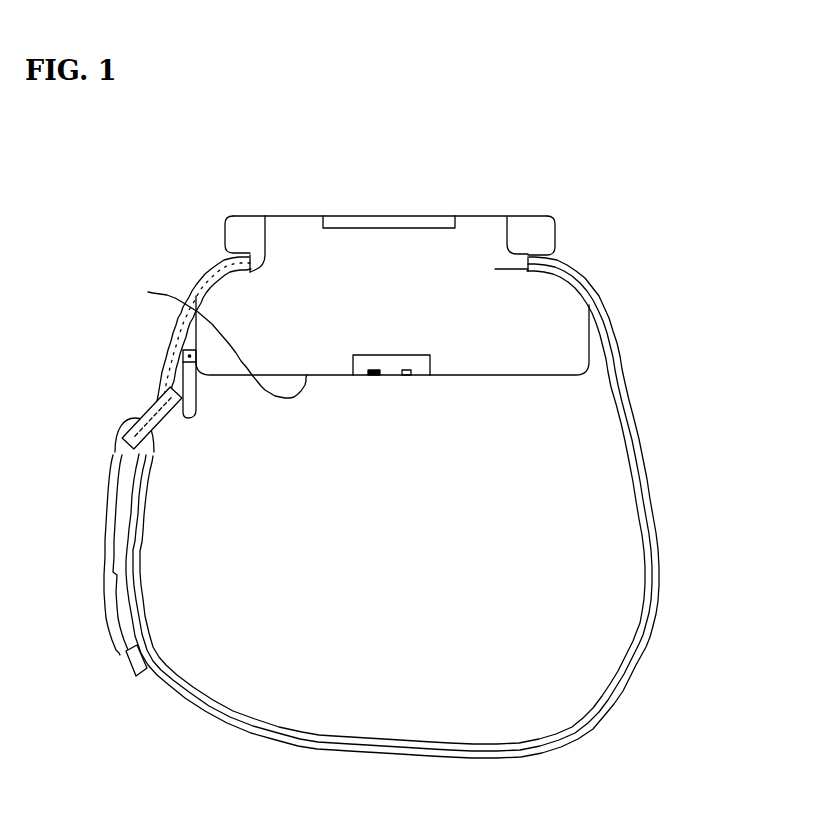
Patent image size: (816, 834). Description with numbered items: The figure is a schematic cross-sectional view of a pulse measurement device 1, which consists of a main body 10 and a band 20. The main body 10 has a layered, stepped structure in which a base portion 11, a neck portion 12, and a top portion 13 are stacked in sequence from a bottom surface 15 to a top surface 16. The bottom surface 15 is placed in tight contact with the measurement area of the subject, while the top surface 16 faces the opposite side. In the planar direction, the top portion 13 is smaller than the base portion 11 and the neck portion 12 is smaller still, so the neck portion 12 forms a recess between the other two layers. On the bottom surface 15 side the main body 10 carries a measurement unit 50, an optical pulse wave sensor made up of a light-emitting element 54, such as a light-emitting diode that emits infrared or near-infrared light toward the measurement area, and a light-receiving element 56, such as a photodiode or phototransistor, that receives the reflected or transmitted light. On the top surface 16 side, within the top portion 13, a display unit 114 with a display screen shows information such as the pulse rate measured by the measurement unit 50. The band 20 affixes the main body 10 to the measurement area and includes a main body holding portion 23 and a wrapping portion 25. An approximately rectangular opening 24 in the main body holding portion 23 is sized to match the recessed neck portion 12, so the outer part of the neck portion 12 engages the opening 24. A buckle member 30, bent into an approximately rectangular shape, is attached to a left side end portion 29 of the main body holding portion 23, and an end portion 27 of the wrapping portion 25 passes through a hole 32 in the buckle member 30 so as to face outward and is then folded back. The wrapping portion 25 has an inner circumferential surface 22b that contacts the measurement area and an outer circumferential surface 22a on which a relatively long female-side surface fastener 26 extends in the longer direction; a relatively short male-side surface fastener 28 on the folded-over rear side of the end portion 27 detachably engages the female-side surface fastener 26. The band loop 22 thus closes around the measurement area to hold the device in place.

The pulse measurement device 1 is at (684, 658).
The main body 10 is at (362, 178).
The base portion 11 is at (547, 350).
The neck portion 12 is at (537, 262).
The top portion 13 is at (548, 230).
The bottom surface 15 is at (212, 338).
The top surface 16 is at (287, 215).
The band 20 is at (588, 735).
The band loop 22 is at (436, 521).
The outer circumferential surface 22a is at (650, 620).
The inner circumferential surface 22b is at (648, 509).
The main body holding portion 23 is at (222, 265).
The opening 24 is at (252, 215).
The wrapping portion 25 is at (648, 478).
The female-side surface fastener 26 is at (207, 717).
The end portion 27 is at (108, 608).
The male-side surface fastener 28 is at (130, 660).
The left side end portion 29 is at (170, 370).
The buckle member 30 is at (158, 423).
The hole 32 is at (140, 410).
The measurement unit 50 is at (452, 384).
The light-emitting element 54 is at (372, 378).
The light-receiving element 56 is at (408, 378).
The display unit 114 is at (393, 217).